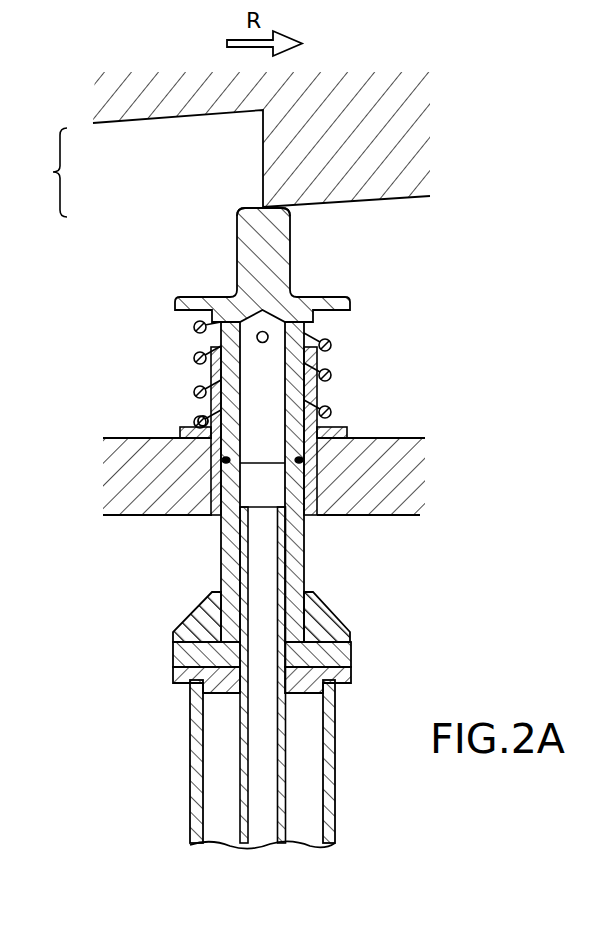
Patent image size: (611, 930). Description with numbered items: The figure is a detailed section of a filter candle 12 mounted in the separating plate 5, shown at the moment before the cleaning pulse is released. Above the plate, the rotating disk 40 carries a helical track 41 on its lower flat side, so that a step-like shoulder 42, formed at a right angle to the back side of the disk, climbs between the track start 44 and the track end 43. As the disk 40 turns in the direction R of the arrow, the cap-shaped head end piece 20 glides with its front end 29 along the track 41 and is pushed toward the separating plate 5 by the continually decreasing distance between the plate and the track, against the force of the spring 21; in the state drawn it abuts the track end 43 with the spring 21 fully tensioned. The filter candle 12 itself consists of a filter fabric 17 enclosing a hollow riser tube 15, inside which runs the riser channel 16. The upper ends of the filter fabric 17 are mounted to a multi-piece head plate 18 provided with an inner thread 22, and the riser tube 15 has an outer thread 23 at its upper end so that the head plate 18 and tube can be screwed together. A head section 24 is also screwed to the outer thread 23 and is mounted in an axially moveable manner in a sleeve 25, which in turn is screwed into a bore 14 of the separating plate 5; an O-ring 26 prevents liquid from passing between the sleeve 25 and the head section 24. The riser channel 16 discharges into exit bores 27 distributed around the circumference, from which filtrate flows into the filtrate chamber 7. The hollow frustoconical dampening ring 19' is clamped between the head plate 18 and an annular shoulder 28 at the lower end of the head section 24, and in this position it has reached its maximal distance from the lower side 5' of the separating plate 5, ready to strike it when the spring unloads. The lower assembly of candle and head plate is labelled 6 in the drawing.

The disk 40 is at (403, 127).
The shoulder 42 is at (44, 172).
The helical track 41 is at (125, 123).
The track start 44 is at (263, 110).
The front end 29 is at (262, 206).
The track end 43 is at (246, 232).
The head end piece 20 is at (246, 266).
The filtrate chamber 7 is at (418, 299).
The exit bores 27 is at (305, 337).
The spring 21 is at (332, 372).
The head section 24 is at (228, 415).
The sleeve 25 is at (312, 385).
The O-ring 26 is at (185, 447).
The separating plate 5 is at (286, 476).
The lower side of the separating plate 5' is at (276, 538).
The bore 14 is at (212, 477).
The outer thread 23 is at (290, 557).
The annular shoulder 28 is at (305, 590).
The frustoconical dampening ring 19' is at (289, 617).
The head plate 18 is at (350, 670).
The suction unit 6 is at (127, 643).
The inner thread 22 is at (233, 657).
The filter candle 12 is at (312, 750).
The filter fabric 17 is at (333, 778).
The riser tube 15 is at (290, 814).
The riser channel 16 is at (258, 780).